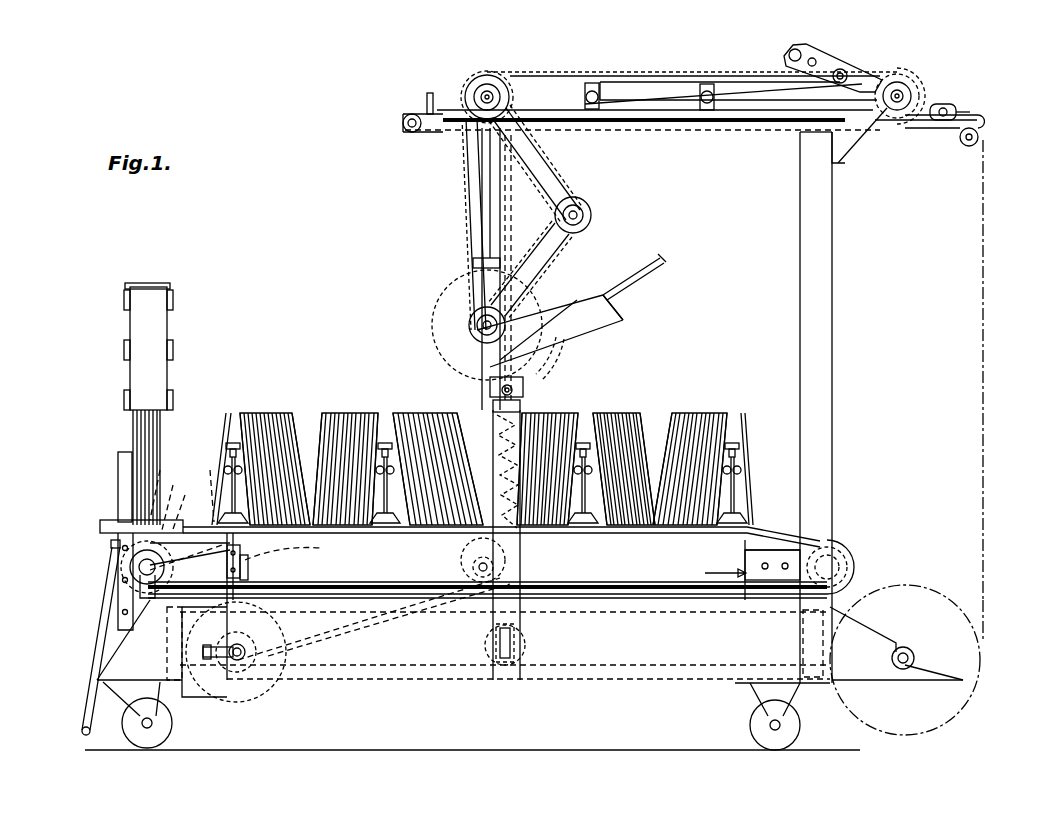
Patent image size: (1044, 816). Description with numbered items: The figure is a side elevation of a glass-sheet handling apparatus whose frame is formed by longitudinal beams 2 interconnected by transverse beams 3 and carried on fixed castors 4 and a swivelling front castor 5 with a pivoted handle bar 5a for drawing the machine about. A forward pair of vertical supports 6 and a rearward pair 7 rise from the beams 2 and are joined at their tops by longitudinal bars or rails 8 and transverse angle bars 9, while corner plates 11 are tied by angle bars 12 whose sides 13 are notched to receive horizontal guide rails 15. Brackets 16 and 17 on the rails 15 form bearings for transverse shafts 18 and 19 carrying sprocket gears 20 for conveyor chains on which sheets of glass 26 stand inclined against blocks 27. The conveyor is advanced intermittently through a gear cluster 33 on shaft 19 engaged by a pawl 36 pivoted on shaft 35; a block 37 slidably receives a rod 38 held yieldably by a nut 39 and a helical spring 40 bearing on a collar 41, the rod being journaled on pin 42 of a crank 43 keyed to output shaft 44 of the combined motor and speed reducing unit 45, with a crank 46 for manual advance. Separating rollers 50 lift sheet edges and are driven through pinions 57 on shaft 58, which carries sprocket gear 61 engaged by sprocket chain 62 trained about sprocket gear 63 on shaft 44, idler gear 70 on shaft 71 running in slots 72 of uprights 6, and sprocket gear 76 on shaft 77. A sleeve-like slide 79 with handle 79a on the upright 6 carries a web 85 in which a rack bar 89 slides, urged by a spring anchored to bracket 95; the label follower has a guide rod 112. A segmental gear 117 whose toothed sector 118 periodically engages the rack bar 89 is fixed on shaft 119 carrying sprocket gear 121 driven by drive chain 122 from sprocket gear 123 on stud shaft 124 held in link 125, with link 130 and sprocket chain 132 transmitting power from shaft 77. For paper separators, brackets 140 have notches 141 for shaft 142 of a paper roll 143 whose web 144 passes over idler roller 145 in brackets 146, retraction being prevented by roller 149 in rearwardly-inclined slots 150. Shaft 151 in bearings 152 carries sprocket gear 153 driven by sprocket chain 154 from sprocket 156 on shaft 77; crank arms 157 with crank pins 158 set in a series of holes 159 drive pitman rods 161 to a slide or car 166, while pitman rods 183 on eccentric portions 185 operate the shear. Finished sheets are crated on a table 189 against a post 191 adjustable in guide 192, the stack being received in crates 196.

The longitudinal beams 2 is at (597, 678).
The transverse beams 3 is at (172, 660).
The fixed castors 4 is at (752, 727).
The swivelling front castor 5 is at (172, 726).
The pivoted handle bar 5a is at (98, 640).
The forward pair of vertical supports 6 is at (522, 576).
The rearward pair of vertical supports 7 is at (822, 436).
The longitudinal bars or rails 8 is at (790, 116).
The transverse angle bars 9 is at (540, 134).
The plates 11 is at (750, 636).
The angle bars 12 is at (712, 572).
The sides of the angle bars 13 is at (748, 560).
The horizontal guide rails 15 is at (650, 526).
The longitudinally projecting bracket 16 is at (178, 502).
The longitudinally projecting bracket 17 is at (760, 545).
The transverse shaft 18 is at (842, 548).
The transverse shaft 19 is at (140, 572).
The sprocket gears 20 is at (120, 568).
The sheets of glass 26 is at (265, 418).
The blocks 27 is at (387, 443).
The cluster of gears 33 is at (167, 486).
The shaft 35 is at (203, 488).
The pawl 36 is at (188, 512).
The block 37 is at (247, 575).
The rod 38 is at (225, 627).
The nut 39 is at (282, 546).
The helical spring 40 is at (248, 590).
The collar 41 is at (245, 598).
The pin 42 is at (248, 652).
The crank 43 is at (240, 660).
The output shaft 44 is at (243, 658).
The combined motor and speed reducing unit 45 is at (233, 690).
The crank 46 is at (150, 605).
The rollers 50 is at (492, 500).
The pinions 57 is at (478, 568).
The shaft 58 is at (492, 570).
The sprocket gear 61 is at (470, 560).
The sprocket chain 62 is at (466, 152).
The sprocket gear 63 is at (250, 660).
The idler gear 70 is at (492, 643).
The shaft 71 is at (512, 645).
The slots 72 is at (515, 658).
The sprocket gear 76 is at (474, 78).
The shaft 77 is at (495, 97).
The sleeve-like slide 79 is at (527, 380).
The handle 79a is at (525, 397).
The web 85 is at (578, 300).
The rack bar 89 is at (585, 352).
The bracket 95 is at (624, 320).
The guide rod 112 is at (662, 260).
The segmental gear 117 is at (432, 323).
The toothed sector 118 is at (600, 335).
The shaft 119 is at (470, 340).
The sprocket gear 121 is at (478, 322).
The drive chain 122 is at (526, 310).
The sprocket gear 123 is at (585, 220).
The stud shaft 124 is at (582, 214).
The link 125 is at (540, 256).
The link 130 is at (540, 166).
The sprocket chain 132 is at (570, 176).
The brackets 140 is at (870, 678).
The notches 141 is at (910, 656).
The shaft 142 is at (903, 650).
The roll of paper 143 is at (945, 725).
The web 144 is at (982, 232).
The idler roller 145 is at (965, 147).
The brackets 146 is at (935, 129).
The roller 149 is at (950, 111).
The rearwardly-inclined slots 150 is at (958, 116).
The shaft 151 is at (925, 84).
The bearings 152 is at (946, 105).
The sprocket gear 153 is at (891, 78).
The sprocket chain 154 is at (692, 73).
The sprocket 156 is at (491, 72).
The crank arms 157 is at (826, 58).
The crank pins 158 is at (843, 69).
The series of holes 159 is at (796, 49).
The pitman rods 161 is at (646, 80).
The slide or car 166 is at (652, 104).
The pitman rods 183 is at (755, 112).
The eccentric portions 185 is at (882, 114).
The platform or table 189 is at (110, 518).
The post 191 is at (125, 470).
The guide 192 is at (105, 548).
The crates 196 is at (168, 327).